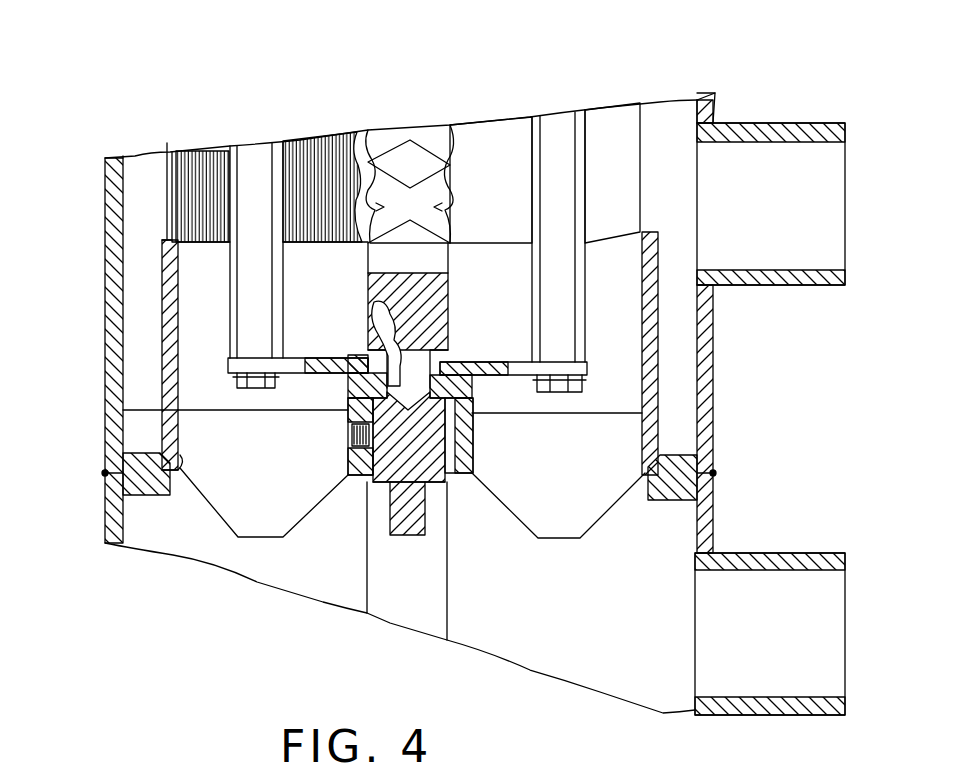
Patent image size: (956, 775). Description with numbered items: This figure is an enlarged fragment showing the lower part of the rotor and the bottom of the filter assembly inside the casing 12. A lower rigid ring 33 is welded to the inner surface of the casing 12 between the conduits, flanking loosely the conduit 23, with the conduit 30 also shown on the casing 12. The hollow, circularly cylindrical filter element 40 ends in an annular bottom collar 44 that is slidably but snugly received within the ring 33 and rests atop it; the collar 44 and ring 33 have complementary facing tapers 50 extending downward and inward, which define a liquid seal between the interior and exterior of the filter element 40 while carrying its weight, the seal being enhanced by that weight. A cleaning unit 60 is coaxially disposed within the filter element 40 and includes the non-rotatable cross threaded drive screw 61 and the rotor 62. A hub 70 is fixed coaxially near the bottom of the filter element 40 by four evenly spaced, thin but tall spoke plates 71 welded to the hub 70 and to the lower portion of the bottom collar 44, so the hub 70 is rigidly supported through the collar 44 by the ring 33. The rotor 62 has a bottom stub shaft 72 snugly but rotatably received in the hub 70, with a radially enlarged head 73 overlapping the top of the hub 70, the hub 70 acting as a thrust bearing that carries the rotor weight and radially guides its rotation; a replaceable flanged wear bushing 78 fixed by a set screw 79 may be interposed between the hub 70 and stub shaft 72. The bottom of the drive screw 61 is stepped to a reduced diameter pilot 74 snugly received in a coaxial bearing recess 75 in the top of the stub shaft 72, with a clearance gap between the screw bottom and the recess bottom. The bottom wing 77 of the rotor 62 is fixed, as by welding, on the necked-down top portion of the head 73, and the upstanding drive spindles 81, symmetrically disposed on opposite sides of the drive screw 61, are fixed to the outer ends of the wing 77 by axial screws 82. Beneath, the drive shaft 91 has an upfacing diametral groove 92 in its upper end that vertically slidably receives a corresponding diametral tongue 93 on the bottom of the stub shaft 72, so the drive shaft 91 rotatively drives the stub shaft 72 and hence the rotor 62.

The casing 12 is at (105, 345).
The conduit 23 is at (832, 285).
The conduit 30 is at (848, 556).
The lower rigid ring 33 is at (122, 484).
The filter element 40 is at (160, 172).
The bottom collar 44 is at (165, 405).
The facing tapers 50 is at (185, 468).
The cleaning unit 60 is at (245, 130).
The cross threaded drive screw 61 is at (408, 132).
The rotor 62 is at (572, 104).
The hub 70 is at (472, 460).
The spoke plates 71 is at (263, 530).
The stub shaft 72 is at (347, 468).
The head 73 is at (350, 385).
The pilot 74 is at (432, 376).
The bearing recess 75 is at (392, 360).
The bottom wing 77 is at (655, 362).
The flanged wear bushing 78 is at (460, 484).
The set screw 79 is at (345, 400).
The drive spindles 81 is at (262, 150).
The axial screws 82 is at (240, 384).
The drive shaft 91 is at (405, 625).
The diametral groove 92 is at (392, 520).
The diametral tongue 93 is at (392, 505).